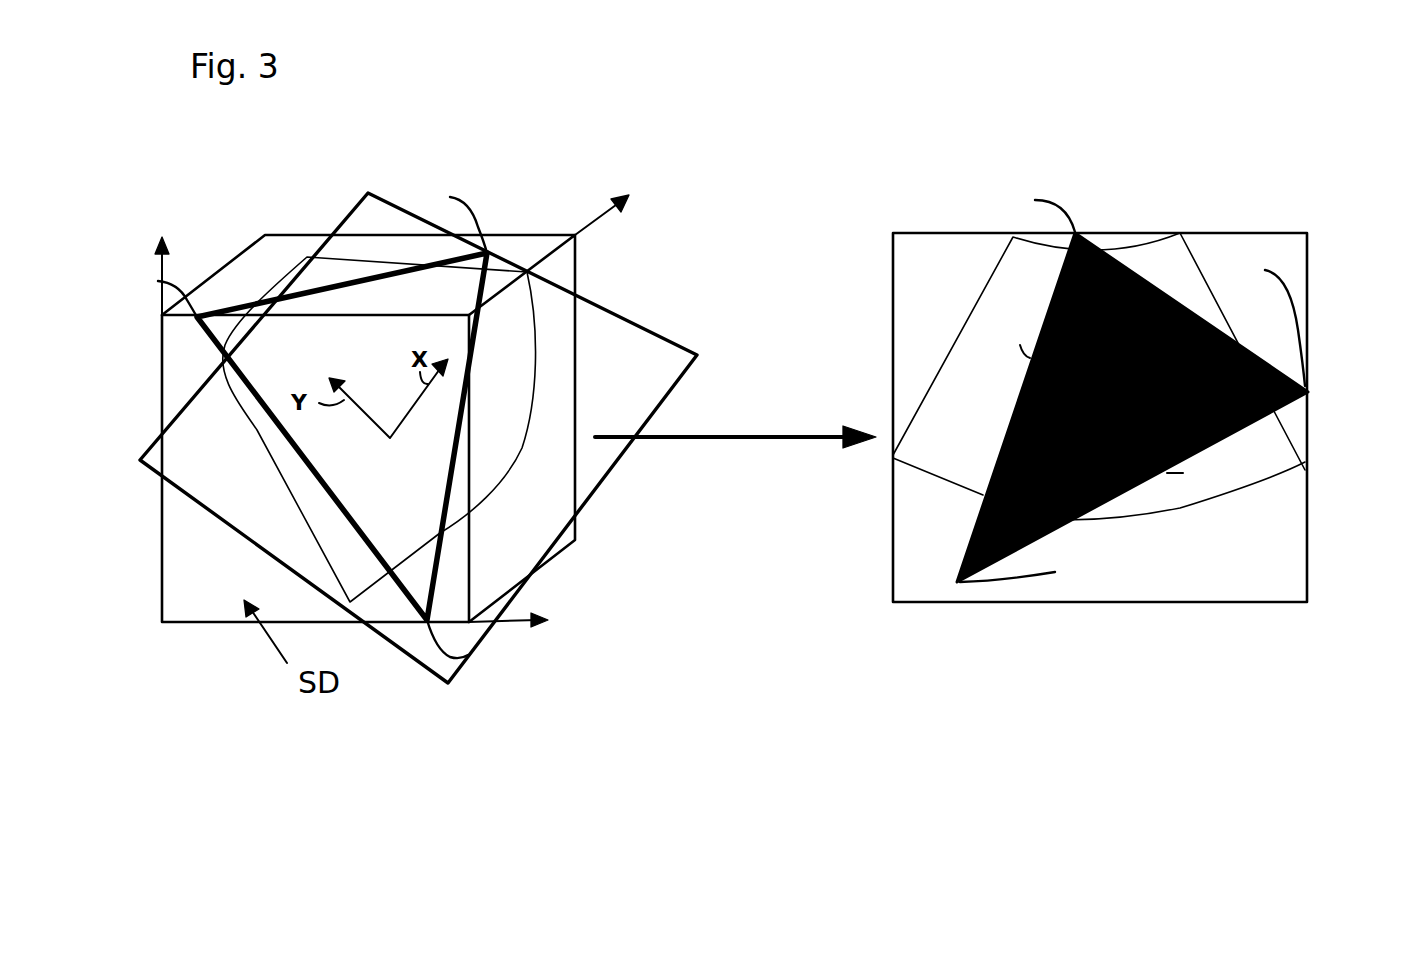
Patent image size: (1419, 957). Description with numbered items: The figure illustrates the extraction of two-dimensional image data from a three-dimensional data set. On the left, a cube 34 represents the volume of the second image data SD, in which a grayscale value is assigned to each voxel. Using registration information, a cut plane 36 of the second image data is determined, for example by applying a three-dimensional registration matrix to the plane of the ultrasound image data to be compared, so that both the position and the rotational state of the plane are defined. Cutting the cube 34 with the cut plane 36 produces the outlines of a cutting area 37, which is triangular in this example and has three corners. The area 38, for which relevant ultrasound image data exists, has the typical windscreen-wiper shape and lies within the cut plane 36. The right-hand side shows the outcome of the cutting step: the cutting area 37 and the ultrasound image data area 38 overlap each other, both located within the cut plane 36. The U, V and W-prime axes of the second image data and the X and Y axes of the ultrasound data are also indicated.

The cube 34 is at (178, 622).
The cut plane 36 is at (617, 500).
The cutting area 37 is at (462, 451).
The area 38 is at (283, 480).